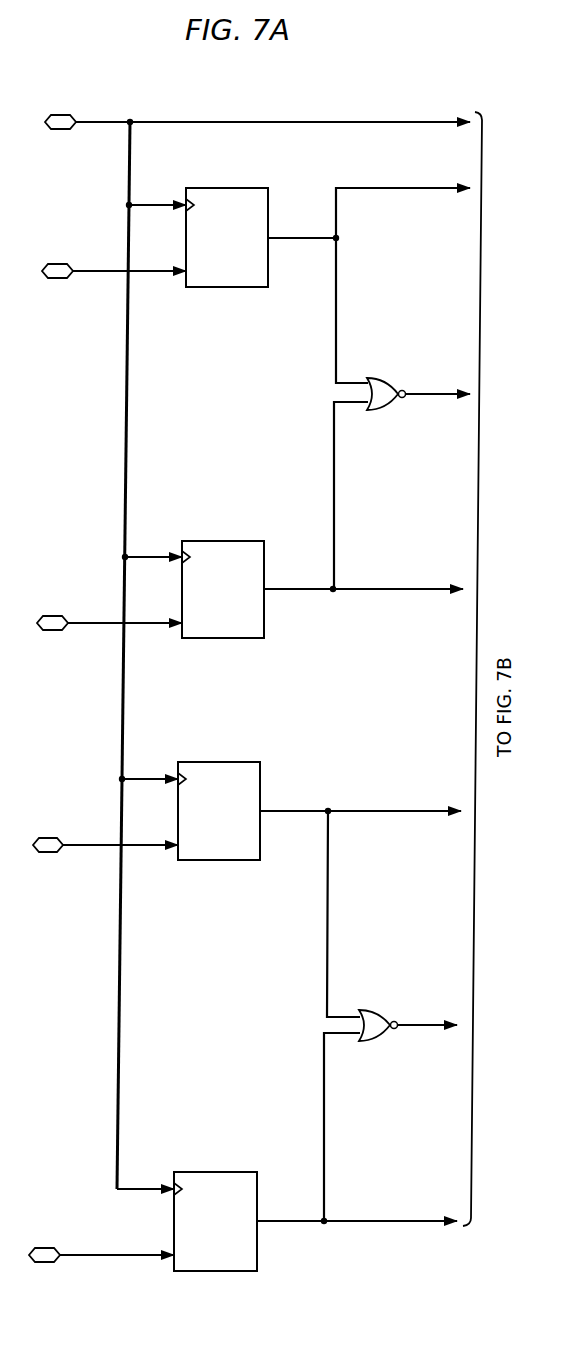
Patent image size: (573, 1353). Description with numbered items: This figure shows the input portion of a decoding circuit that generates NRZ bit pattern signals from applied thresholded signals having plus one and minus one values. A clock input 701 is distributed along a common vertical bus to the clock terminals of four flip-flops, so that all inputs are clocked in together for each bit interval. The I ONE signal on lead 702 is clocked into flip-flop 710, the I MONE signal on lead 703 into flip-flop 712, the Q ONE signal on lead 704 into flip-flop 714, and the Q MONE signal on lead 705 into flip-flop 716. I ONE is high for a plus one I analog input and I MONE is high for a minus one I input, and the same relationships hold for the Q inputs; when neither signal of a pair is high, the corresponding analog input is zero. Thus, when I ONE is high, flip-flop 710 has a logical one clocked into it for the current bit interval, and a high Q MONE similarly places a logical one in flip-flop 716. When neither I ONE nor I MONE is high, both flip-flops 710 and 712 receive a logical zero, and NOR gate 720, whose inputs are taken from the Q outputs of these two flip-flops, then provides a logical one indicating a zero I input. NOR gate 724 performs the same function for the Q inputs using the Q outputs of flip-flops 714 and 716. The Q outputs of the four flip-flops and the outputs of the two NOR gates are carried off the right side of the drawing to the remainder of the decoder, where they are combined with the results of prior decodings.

The CLOCK input 701 is at (63, 115).
The I ONE input lead 702 is at (60, 264).
The I MONE input lead 703 is at (55, 616).
The Q ONE input lead 704 is at (51, 838).
The Q MONE input lead 705 is at (48, 1248).
The flip-flop 710 is at (240, 188).
The flip-flop 712 is at (236, 541).
The flip-flop 714 is at (232, 762).
The flip-flop 716 is at (228, 1172).
The NOR gate 720 is at (385, 385).
The NOR gate 724 is at (378, 1016).